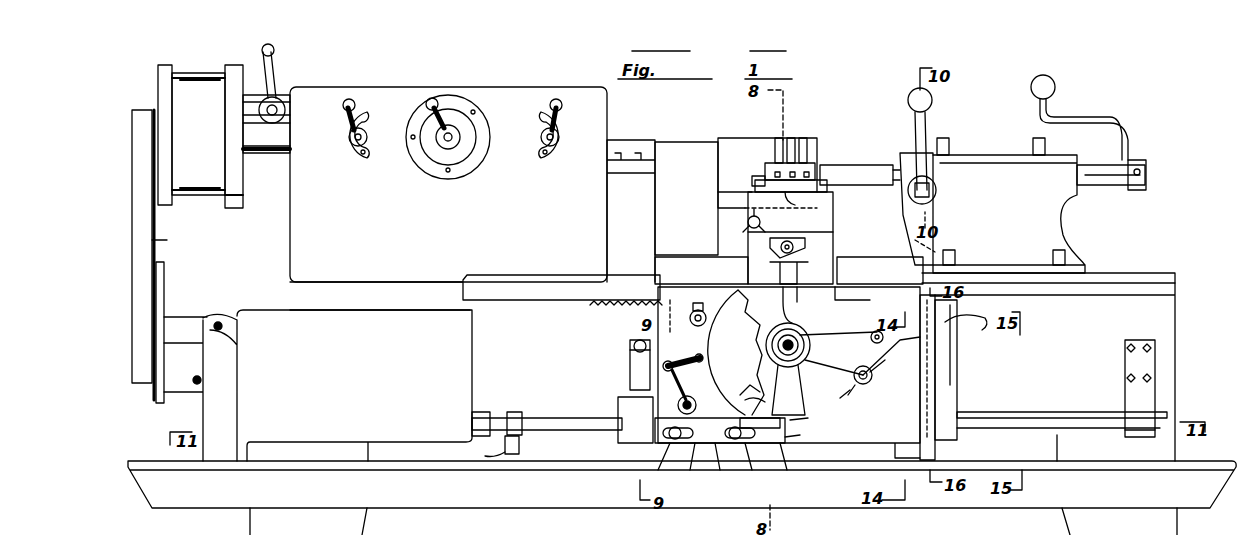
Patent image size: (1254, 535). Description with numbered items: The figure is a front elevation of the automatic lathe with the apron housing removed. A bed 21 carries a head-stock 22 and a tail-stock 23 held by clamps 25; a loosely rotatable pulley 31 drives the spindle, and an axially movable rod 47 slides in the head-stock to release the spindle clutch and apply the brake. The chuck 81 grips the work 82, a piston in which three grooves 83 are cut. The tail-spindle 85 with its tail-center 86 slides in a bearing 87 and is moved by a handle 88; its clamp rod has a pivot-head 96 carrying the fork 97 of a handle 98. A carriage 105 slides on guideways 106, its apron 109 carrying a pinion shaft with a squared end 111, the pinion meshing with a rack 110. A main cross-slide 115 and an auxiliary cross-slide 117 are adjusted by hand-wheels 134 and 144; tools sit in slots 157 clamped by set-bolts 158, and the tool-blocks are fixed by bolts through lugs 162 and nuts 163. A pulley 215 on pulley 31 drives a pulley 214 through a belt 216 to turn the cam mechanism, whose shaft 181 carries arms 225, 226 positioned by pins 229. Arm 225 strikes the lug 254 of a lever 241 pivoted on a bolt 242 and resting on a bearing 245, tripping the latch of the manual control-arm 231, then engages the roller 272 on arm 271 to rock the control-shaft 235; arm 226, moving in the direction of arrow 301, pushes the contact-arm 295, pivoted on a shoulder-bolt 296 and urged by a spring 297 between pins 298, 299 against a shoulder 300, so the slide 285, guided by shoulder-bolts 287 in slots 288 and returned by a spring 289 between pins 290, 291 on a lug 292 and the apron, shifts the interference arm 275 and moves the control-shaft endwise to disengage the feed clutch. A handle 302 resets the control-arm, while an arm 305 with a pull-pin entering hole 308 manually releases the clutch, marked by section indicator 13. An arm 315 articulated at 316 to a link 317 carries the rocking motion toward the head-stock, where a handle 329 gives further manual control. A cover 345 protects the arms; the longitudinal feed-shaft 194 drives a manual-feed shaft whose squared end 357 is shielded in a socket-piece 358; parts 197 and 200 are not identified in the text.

The lever 13 is at (665, 350).
The bed 21 is at (1175, 326).
The head-stock 22 is at (510, 83).
The tail-stock 23 is at (975, 155).
The clamps 25 is at (1053, 258).
The pulley 31 is at (185, 68).
The axially movable rod 47 is at (276, 86).
The chuck 81 is at (680, 143).
The work 82 is at (728, 138).
The grooves 83 is at (774, 152).
The tail-spindle 85 is at (848, 185).
The tail-center 86 is at (828, 163).
The bearing 87 is at (905, 153).
The handle 88 is at (1055, 87).
The pivot-head 96 is at (930, 195).
The fork 97 is at (936, 185).
The handle 98 is at (932, 100).
The carriage 105 is at (852, 297).
The guideways 106 is at (1108, 270).
The apron 109 is at (880, 460).
The rack 110 is at (590, 312).
The squared end 111 is at (690, 314).
The cross-slide 115 is at (833, 243).
The auxiliary cross-slide 117 is at (833, 217).
The hand-wheel 134 is at (770, 247).
The hand-wheel 144 is at (748, 222).
The slots 157 is at (790, 199).
The set-bolts 158 is at (805, 140).
The lugs 162 is at (718, 192).
The nuts 163 is at (752, 178).
The shaft 181 is at (790, 390).
The longitudinal feed-shaft 194 is at (1060, 412).
The bracket 197 is at (1125, 404).
The gear box 200 is at (472, 355).
The pulley 214 is at (164, 295).
The pulley 215 is at (138, 108).
The belt 216 is at (176, 239).
The arm 225 is at (808, 335).
The arm 226 is at (840, 382).
The pins 229 is at (823, 356).
The manual control-arm 231 is at (957, 362).
The control-shaft 235 is at (985, 428).
The lever 241 is at (945, 305).
The bolt 242 is at (877, 331).
The bearing 245 is at (957, 385).
The lug 254 is at (872, 380).
The arm 271 is at (896, 379).
The roller 272 is at (867, 396).
The arm 275 is at (618, 408).
The slide 285 is at (765, 439).
The shoulder-bolts 287 is at (655, 445).
The slots 288 is at (709, 428).
The spring 289 is at (730, 472).
The pin 290 is at (692, 470).
The pin 291 is at (765, 466).
The lug 292 is at (654, 467).
The contact-arm 295 is at (815, 419).
The shoulder-bolt 296 is at (800, 467).
The spring 297 is at (753, 405).
The pin 298 is at (705, 405).
The pin 299 is at (809, 436).
The shoulder 300 is at (751, 383).
The arrow 301 is at (863, 407).
The handle 302 is at (980, 331).
The arm 305 is at (699, 385).
The hole 308 is at (736, 352).
The arm 315 is at (515, 412).
The articulation 316 is at (519, 446).
The link 317 is at (477, 450).
The handle 329 is at (274, 50).
The cover 345 is at (789, 270).
The squared end 357 is at (632, 344).
The socket-piece 358 is at (630, 372).